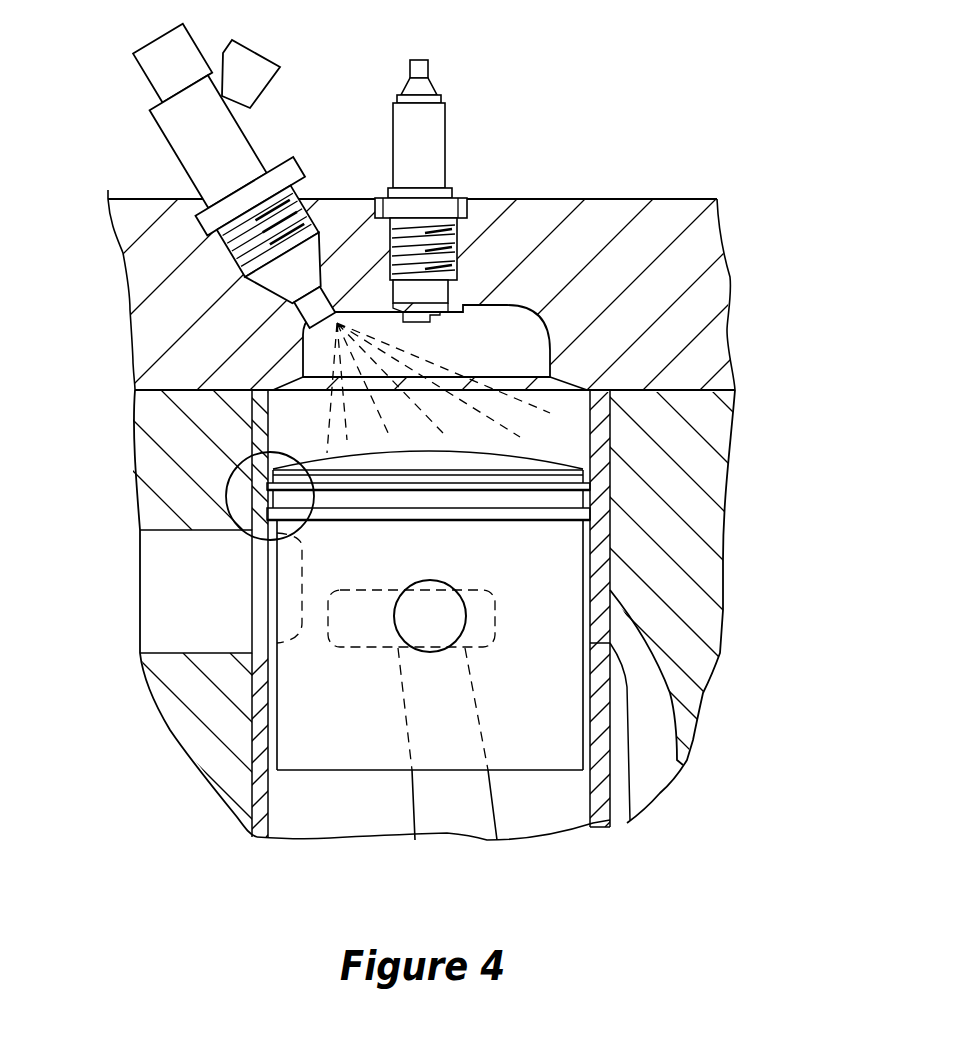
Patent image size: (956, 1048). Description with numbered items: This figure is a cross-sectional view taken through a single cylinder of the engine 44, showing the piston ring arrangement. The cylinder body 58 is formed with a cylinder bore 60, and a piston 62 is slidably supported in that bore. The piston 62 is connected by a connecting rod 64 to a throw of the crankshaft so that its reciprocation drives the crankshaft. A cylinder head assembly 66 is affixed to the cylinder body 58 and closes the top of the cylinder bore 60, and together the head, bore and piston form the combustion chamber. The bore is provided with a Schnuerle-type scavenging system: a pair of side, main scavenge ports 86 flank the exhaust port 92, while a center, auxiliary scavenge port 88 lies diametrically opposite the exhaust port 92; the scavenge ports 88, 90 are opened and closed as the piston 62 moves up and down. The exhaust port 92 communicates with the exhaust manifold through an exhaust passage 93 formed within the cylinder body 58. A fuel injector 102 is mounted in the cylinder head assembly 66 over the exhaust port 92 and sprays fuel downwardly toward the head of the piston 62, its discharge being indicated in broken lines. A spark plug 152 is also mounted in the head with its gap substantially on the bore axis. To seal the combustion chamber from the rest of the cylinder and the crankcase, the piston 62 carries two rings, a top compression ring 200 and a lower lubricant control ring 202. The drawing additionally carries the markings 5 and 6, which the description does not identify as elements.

The engine 44 is at (676, 174).
The cylinder head assembly 66 is at (730, 300).
The fuel injector 102 is at (268, 137).
The spark plug 152 is at (450, 138).
The cylinder body 58 is at (723, 645).
The exhaust passage 93 is at (170, 645).
The auxiliary scavenge port 88 is at (657, 780).
The cylinder bore 60 is at (428, 623).
The top compression ring 200 is at (463, 487).
The lower lubricant control ring 202 is at (463, 513).
The scavenge port 90 is at (585, 620).
The piston 62 is at (347, 772).
The exhaust port 92 is at (277, 640).
The main scavenge port 86 is at (473, 598).
The connecting rod 64 is at (493, 805).
The detail view circle (FIG. 6) 6 is at (312, 439).
The section line (FIG. 5) 5 is at (92, 613).